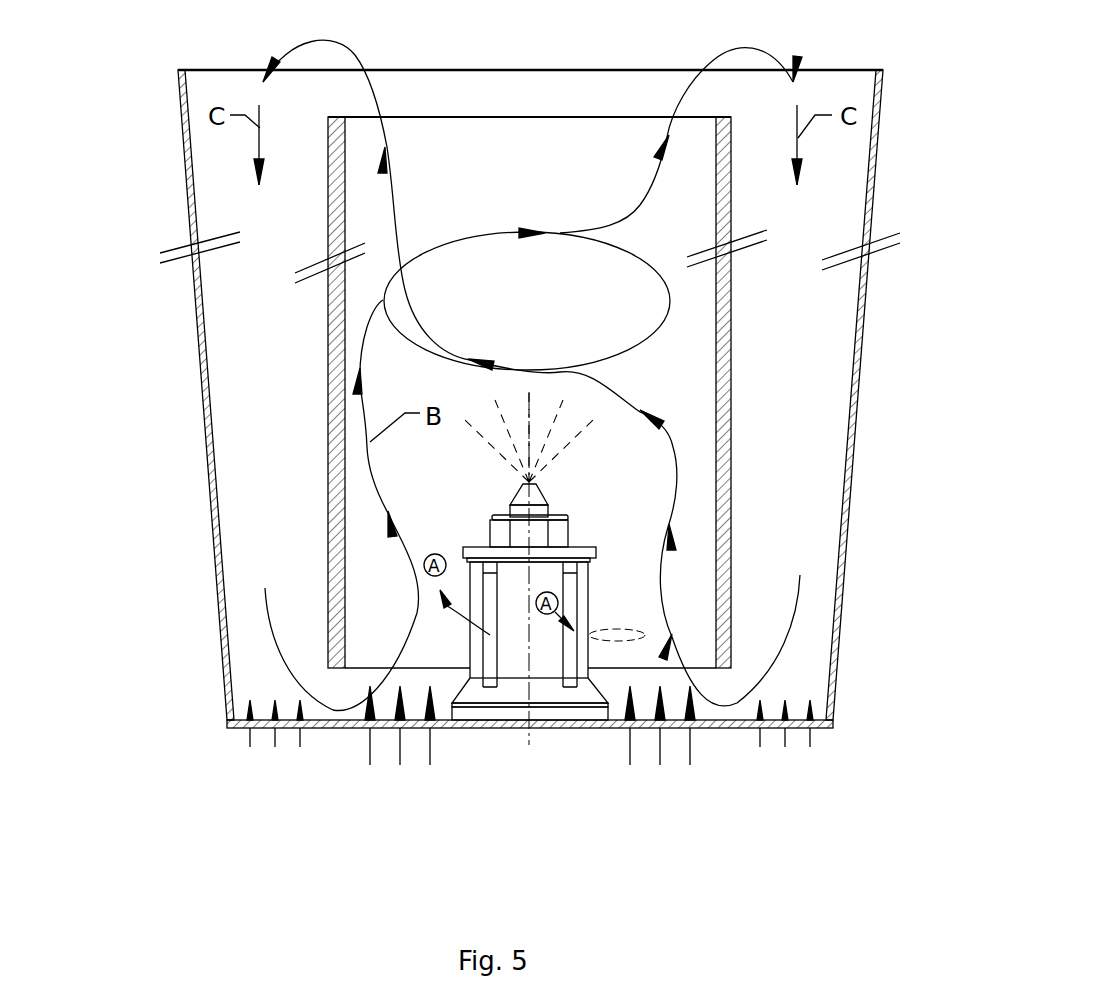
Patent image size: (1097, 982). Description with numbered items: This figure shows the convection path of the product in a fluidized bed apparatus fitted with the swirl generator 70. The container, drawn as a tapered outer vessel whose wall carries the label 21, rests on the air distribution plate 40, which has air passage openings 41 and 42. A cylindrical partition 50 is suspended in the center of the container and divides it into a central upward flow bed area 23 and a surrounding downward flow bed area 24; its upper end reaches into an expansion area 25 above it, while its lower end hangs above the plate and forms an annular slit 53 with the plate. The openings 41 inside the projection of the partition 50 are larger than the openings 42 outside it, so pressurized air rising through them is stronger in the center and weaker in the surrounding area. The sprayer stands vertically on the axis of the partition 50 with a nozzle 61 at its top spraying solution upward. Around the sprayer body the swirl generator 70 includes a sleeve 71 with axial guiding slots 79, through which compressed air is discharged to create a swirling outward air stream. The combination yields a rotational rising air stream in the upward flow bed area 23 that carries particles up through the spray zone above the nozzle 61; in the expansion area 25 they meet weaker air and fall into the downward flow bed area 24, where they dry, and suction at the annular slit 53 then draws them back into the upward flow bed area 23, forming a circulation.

The outer tank 21 is at (187, 157).
The expansion area 25 is at (758, 55).
The downward flow bed area 24 is at (798, 208).
The nozzle 61 is at (548, 490).
The upward flow bed area 23 is at (420, 518).
The partition 50 is at (323, 513).
The swirl generator 70 is at (598, 547).
The sleeve 71 is at (590, 618).
The annular slit 53 is at (328, 688).
The air passage openings 42 is at (275, 728).
The air distribution plate 40 is at (328, 730).
The air passage openings 41 is at (400, 730).
The guiding slots 79 is at (572, 645).